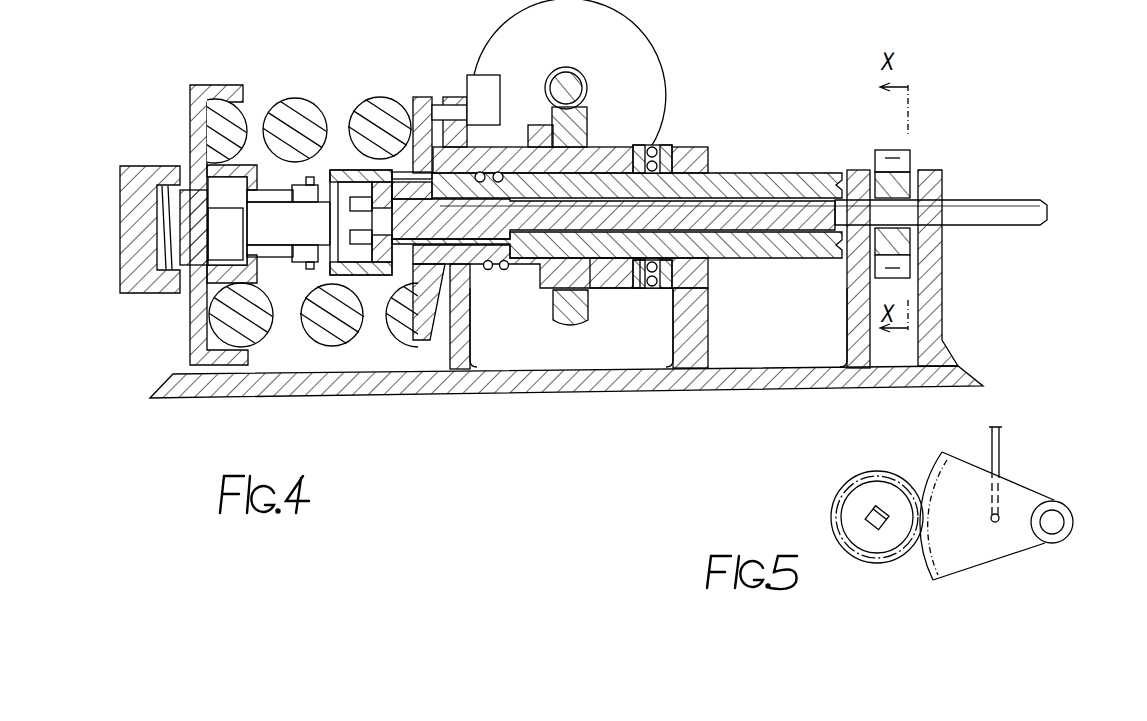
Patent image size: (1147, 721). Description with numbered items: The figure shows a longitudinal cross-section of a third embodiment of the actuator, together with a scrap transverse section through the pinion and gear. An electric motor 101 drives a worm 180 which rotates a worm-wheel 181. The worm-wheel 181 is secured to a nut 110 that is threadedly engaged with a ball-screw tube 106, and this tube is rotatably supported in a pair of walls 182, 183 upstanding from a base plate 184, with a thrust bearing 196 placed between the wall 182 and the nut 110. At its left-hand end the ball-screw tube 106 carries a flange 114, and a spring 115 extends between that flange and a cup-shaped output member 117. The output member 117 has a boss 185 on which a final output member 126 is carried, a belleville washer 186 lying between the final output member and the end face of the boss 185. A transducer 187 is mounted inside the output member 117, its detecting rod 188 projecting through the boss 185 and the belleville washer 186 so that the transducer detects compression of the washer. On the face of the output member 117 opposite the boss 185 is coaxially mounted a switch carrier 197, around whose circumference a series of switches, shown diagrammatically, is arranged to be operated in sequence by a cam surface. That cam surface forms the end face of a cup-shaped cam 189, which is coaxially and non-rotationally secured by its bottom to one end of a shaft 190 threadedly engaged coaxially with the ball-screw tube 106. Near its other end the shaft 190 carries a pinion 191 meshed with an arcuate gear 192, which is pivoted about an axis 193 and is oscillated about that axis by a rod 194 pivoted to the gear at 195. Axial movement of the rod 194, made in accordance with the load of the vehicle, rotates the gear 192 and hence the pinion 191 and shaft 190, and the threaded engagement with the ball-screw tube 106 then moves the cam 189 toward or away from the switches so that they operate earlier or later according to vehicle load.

In FIG. 4, the electric motor 101 is at (585, 36).
In FIG. 4, the ball-screw tube 106 is at (540, 300).
In FIG. 4, the nut 110 is at (600, 272).
In FIG. 4, the flange 114 is at (421, 97).
In FIG. 4, the spring 115 is at (290, 137).
In FIG. 4, the cup-shaped output member 117 is at (178, 314).
In FIG. 4, the final output member 126 is at (135, 168).
In FIG. 4, the worm 180 is at (575, 91).
In FIG. 4, the worm-wheel 181 is at (570, 126).
In FIG. 4, the wall 182 is at (687, 338).
In FIG. 4, the wall 183 is at (455, 333).
In FIG. 4, the base plate 184 is at (807, 374).
In FIG. 4, the boss 185 is at (190, 255).
In FIG. 4, the belleville washer 186 is at (160, 200).
In FIG. 4, the transducer 187 is at (221, 222).
In FIG. 4, the detecting rod 188 is at (185, 222).
In FIG. 4, the cup-shaped cam 189 is at (358, 172).
In FIG. 4, the shaft 190 is at (752, 208).
In FIG. 4, the pinion 191 is at (911, 166).
In FIG. 5, the pinion 191 is at (858, 535).
In FIG. 5, the arcuate gear 192 is at (952, 566).
In FIG. 5, the axis 193 is at (1052, 522).
In FIG. 5, the rod 194 is at (1001, 456).
In FIG. 5, the pivot 195 is at (998, 522).
In FIG. 4, the thrust bearing 196 is at (658, 146).
In FIG. 4, the switch carrier 197 is at (305, 262).